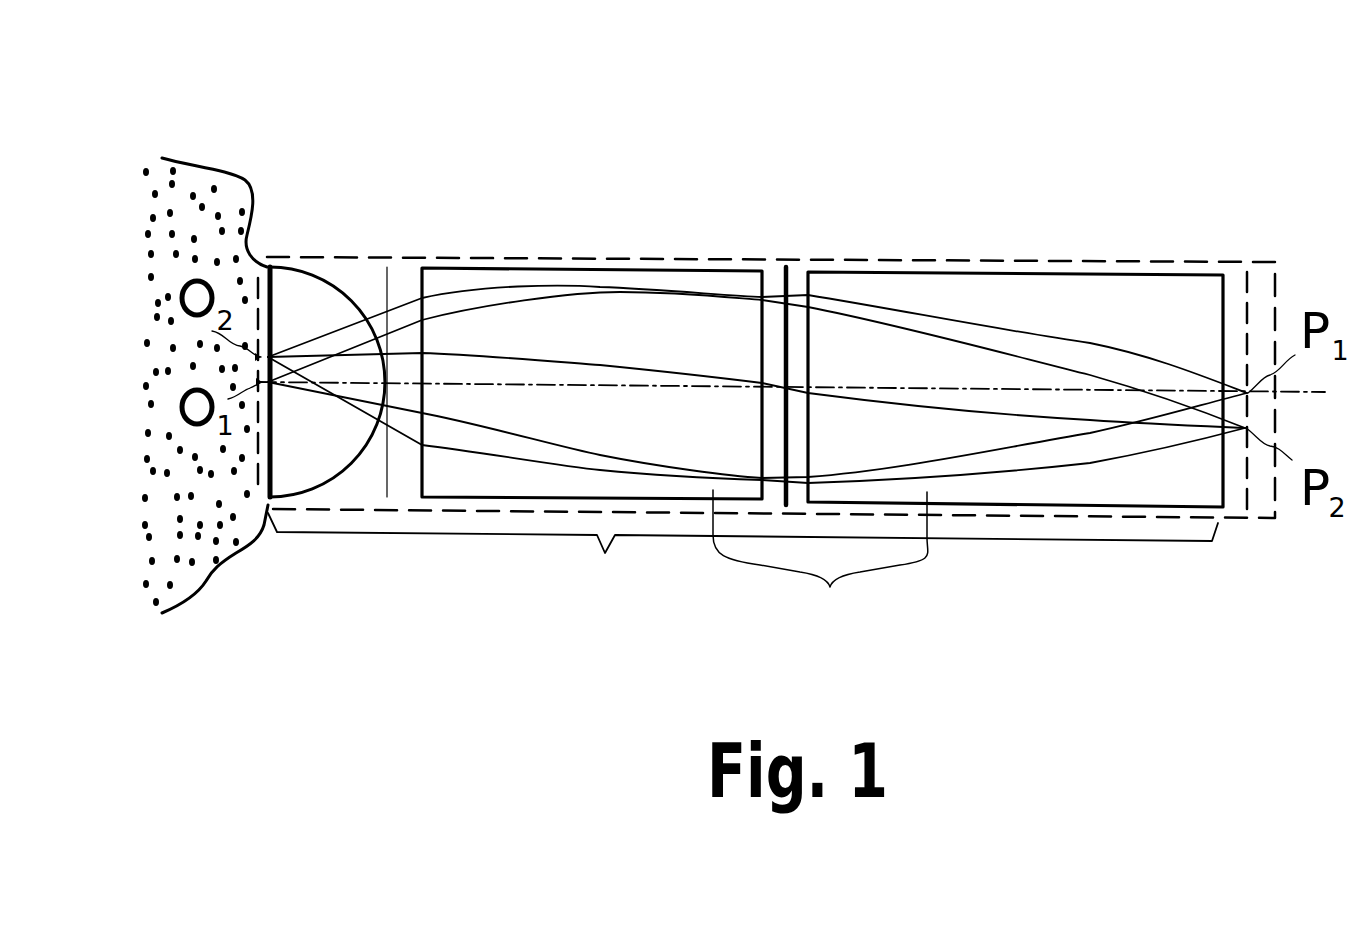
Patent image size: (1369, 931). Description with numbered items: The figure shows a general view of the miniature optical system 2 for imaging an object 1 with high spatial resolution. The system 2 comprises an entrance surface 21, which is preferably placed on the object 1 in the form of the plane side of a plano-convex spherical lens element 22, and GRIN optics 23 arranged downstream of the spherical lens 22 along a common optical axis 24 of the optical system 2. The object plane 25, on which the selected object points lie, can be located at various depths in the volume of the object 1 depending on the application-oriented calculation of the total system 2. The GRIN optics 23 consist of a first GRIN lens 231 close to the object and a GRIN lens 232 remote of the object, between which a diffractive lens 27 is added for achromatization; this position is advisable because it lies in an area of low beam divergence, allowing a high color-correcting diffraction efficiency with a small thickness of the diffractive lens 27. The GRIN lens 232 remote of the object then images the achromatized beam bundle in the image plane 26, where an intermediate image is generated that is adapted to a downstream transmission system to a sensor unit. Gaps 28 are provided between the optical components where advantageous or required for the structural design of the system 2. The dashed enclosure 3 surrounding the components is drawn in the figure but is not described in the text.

The object 1 is at (203, 183).
The miniature optical system 2 is at (605, 553).
The optical system housing (dashed enclosure) 3 is at (1135, 263).
The entrance surface 21 is at (277, 303).
The plano-convex spherical lens element 22 is at (348, 448).
The GRIN optics 23 is at (830, 587).
The first GRIN lens close to the object 231 is at (595, 275).
The GRIN lens remote of the object 232 is at (1012, 278).
The optical axis 24 is at (1027, 388).
The object plane 25 is at (258, 487).
The image plane 26 is at (1247, 520).
The diffractive lens 27 is at (787, 290).
The gaps 28 is at (407, 277).